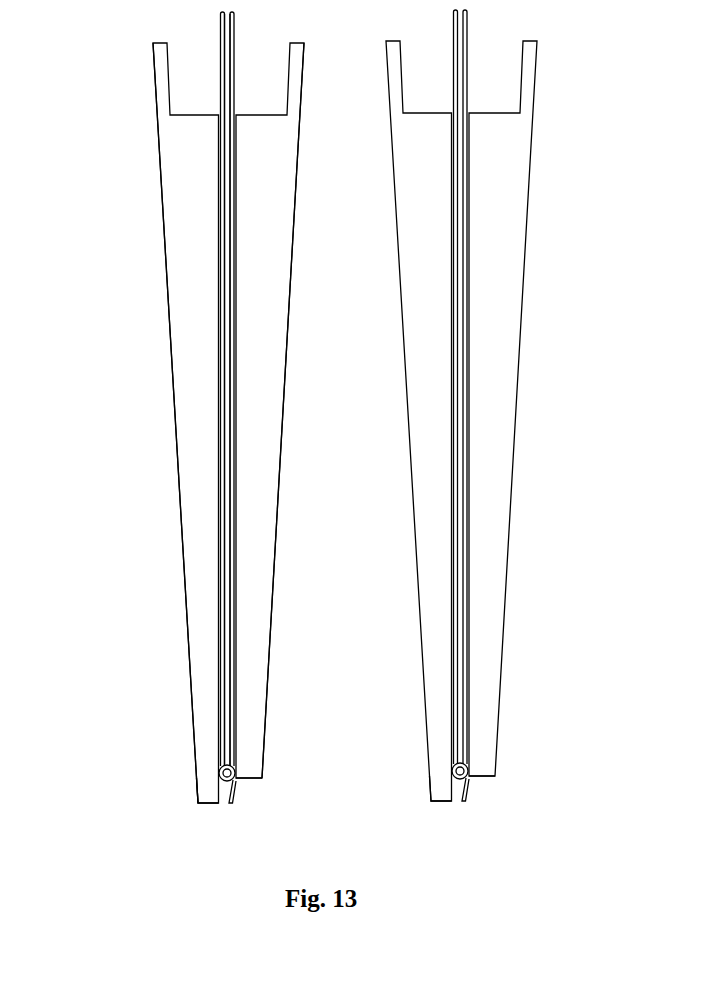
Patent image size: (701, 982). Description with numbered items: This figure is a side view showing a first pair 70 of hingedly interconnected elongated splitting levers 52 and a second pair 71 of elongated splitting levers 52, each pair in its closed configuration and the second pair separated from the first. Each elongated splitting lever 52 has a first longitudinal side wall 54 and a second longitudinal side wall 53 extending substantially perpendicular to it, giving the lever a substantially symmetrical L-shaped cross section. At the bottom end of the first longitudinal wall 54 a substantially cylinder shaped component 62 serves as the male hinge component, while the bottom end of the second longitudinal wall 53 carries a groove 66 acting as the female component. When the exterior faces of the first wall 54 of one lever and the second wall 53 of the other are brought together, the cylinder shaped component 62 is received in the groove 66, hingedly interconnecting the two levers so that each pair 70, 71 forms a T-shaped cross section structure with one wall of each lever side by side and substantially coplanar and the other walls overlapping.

The first pair of elongated splitting levers 70 is at (120, 182).
The second pair of elongated splitting levers 71 is at (374, 184).
The elongated splitting lever 52 is at (182, 306).
The second longitudinal side wall 53 is at (231, 442).
The first longitudinal side wall 54 is at (224, 459).
The cylinder shaped component 62 is at (260, 772).
The groove 66 is at (193, 780).